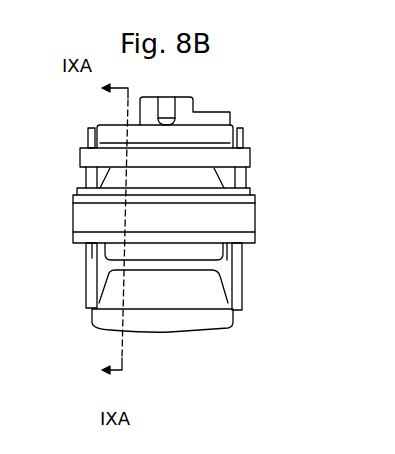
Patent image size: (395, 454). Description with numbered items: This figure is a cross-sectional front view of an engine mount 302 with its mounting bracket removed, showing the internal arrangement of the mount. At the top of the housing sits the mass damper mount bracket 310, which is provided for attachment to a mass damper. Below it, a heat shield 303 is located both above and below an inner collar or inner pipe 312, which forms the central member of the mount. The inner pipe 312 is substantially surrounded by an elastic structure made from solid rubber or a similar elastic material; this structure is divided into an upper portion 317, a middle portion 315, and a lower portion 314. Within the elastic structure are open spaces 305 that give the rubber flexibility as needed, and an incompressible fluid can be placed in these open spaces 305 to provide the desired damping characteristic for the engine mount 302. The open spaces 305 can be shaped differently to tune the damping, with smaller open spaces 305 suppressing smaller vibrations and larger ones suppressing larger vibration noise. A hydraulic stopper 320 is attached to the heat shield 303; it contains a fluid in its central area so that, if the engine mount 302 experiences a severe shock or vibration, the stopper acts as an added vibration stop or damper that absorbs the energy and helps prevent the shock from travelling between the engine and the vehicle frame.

The engine mount 302 is at (80, 344).
The heat shield 303 is at (88, 128).
The open spaces 305 is at (207, 270).
The mass damper mount bracket 310 is at (190, 112).
The inner pipe 312 is at (250, 203).
The lower portion 314 is at (167, 293).
The middle portion 315 is at (110, 253).
The upper portion 317 is at (207, 178).
The hydraulic stopper 320 is at (90, 162).